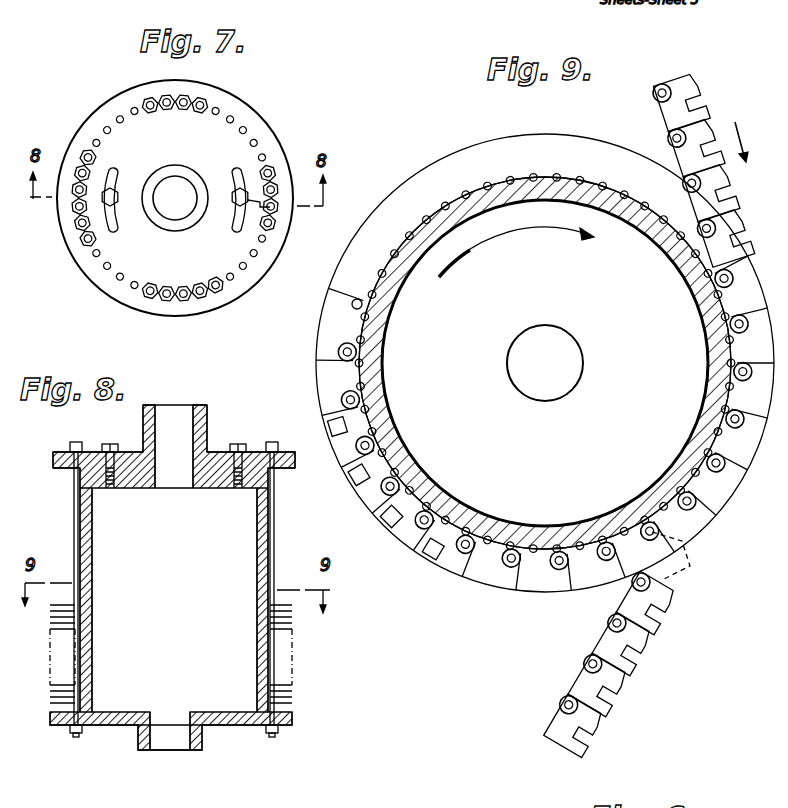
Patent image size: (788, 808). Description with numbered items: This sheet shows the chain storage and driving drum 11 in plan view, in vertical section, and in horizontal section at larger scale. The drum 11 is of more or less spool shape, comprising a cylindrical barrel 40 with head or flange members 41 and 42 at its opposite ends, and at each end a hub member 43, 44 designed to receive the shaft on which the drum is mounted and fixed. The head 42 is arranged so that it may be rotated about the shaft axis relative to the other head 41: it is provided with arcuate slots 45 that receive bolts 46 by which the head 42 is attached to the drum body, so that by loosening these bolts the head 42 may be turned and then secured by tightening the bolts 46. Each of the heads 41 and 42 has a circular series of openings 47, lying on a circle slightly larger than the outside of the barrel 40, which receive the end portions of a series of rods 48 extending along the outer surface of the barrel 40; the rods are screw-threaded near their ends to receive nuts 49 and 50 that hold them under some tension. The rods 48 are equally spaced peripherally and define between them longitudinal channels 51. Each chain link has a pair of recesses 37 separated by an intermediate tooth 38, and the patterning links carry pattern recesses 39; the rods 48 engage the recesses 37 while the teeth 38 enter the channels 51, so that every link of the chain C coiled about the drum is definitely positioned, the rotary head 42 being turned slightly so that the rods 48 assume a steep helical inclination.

In FIG. 8, the drum 11 is at (257, 412).
In FIG. 9, the notches or recesses 37 is at (607, 631).
In FIG. 9, the intermediate tooth 38 is at (601, 642).
In FIG. 9, the notches or recesses 39 is at (624, 656).
In FIG. 8, the cylindrical barrel 40 is at (257, 593).
In FIG. 8, the head or flange member 41 is at (275, 728).
In FIG. 7, the head or flange member 42 is at (232, 292).
In FIG. 8, the head or flange member 42 is at (287, 458).
In FIG. 8, the hub member 43 is at (145, 748).
In FIG. 8, the hub member 44 is at (206, 412).
In FIG. 7, the arcuate slots 45 is at (117, 226).
In FIG. 7, the bolts 46 is at (232, 191).
In FIG. 8, the bolts 46 is at (110, 442).
In FIG. 7, the openings 47 is at (258, 257).
In FIG. 8, the rods 48 is at (272, 511).
In FIG. 9, the rods 48 is at (436, 203).
In FIG. 8, the nuts 49 is at (260, 733).
In FIG. 8, the nuts 50 is at (270, 444).
In FIG. 9, the longitudinal channels 51 is at (494, 174).
In FIG. 8, the chain C is at (292, 617).
In FIG. 9, the chain C is at (694, 586).